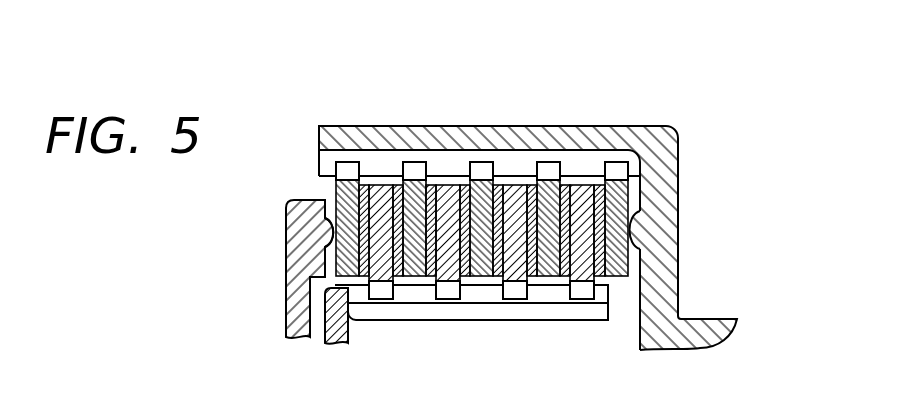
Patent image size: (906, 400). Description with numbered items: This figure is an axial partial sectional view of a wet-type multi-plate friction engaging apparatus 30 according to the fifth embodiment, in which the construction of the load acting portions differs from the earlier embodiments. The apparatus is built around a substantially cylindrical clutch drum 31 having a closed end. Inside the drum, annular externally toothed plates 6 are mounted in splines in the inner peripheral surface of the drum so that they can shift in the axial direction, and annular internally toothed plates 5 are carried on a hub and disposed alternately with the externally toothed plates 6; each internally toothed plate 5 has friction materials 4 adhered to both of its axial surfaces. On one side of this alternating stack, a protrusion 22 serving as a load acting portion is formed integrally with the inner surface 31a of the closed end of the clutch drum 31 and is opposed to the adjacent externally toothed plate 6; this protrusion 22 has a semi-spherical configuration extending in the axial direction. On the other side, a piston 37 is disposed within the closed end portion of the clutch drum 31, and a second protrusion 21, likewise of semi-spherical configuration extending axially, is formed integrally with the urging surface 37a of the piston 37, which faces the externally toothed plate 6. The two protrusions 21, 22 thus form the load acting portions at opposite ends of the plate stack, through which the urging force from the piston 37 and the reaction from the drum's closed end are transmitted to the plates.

The wet-type multi-plate friction engaging apparatus 30 is at (692, 106).
The clutch drum 31 is at (492, 137).
The inner surface of closed end of clutch drum 31a is at (708, 320).
The protrusion 22 is at (632, 230).
The protrusion 21 is at (333, 232).
The piston 37 is at (297, 268).
The urging surface 37a is at (333, 272).
The friction materials 4 is at (500, 277).
The internally toothed plates 5 is at (447, 293).
The externally toothed plates 6 is at (413, 167).